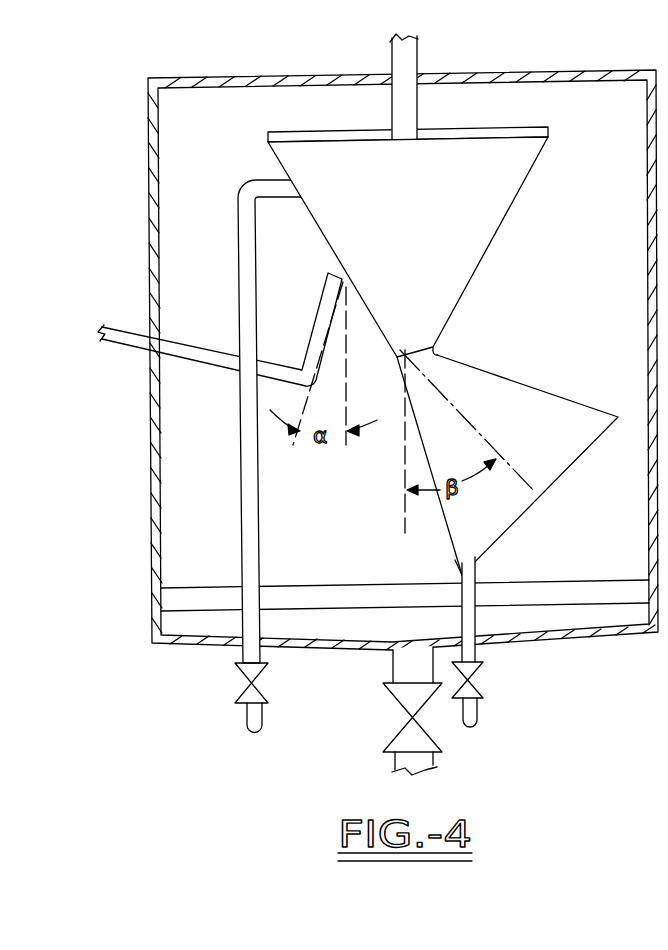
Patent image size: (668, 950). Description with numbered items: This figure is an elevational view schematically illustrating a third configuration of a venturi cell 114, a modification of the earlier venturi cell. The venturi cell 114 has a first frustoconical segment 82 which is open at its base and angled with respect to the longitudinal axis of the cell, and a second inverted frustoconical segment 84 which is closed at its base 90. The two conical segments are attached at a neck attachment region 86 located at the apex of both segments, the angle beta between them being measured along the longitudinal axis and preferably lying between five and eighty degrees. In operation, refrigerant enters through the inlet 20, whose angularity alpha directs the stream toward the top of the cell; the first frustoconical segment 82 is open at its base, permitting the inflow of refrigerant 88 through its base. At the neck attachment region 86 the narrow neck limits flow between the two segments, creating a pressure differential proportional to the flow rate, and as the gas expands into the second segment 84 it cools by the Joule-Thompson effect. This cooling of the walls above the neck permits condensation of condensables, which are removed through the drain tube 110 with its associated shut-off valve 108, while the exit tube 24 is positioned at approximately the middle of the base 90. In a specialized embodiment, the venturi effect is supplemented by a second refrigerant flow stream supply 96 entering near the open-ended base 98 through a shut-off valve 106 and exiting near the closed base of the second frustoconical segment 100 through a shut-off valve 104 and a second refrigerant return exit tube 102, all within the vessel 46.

The inlet 20 is at (318, 312).
The outlet pipe 24 is at (392, 55).
The separator vessel 46 is at (150, 518).
The first frustoconical segment 82 is at (523, 382).
The second inverted frustoconical segment 84 is at (493, 240).
The neck attachment region 86 is at (437, 347).
The inflow of refrigerant 88 is at (545, 510).
The base 90 is at (500, 127).
The second refrigerant flow stream supply 96 is at (478, 712).
The open-ended base 98 is at (457, 568).
The second frustoconical segment 100 is at (258, 182).
The second refrigerant return exit tube 102 is at (248, 720).
The shut-off valve 104 is at (236, 676).
The shut-off valve 106 is at (483, 676).
The shut-off valve 108 is at (385, 735).
The drain tube 110 is at (392, 665).
The venturi cell 114 is at (140, 135).